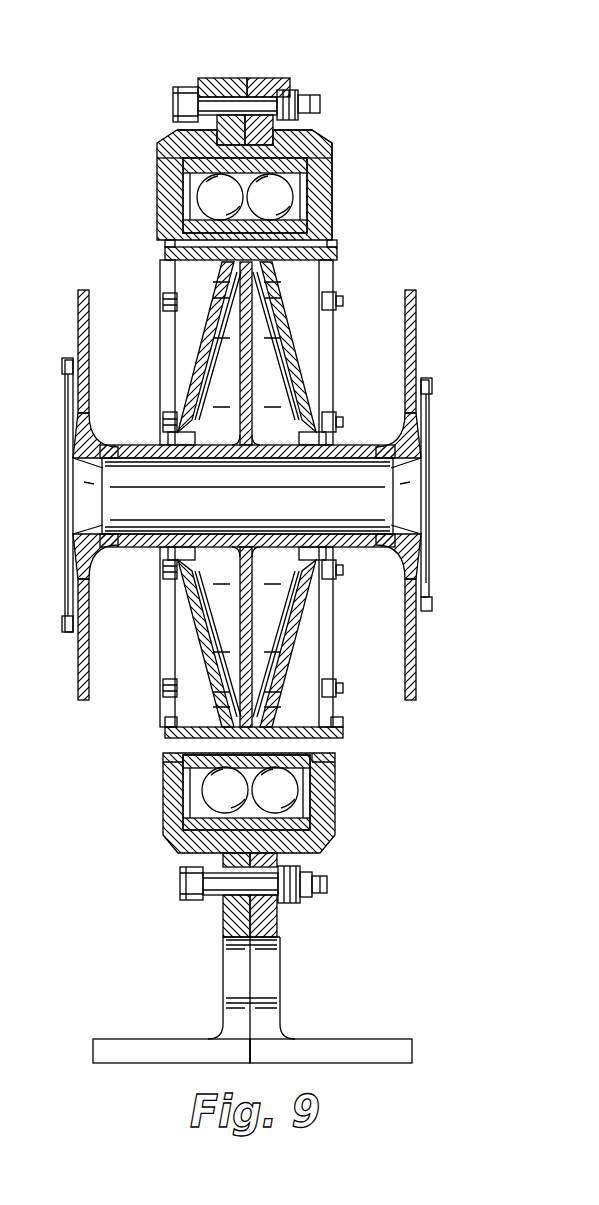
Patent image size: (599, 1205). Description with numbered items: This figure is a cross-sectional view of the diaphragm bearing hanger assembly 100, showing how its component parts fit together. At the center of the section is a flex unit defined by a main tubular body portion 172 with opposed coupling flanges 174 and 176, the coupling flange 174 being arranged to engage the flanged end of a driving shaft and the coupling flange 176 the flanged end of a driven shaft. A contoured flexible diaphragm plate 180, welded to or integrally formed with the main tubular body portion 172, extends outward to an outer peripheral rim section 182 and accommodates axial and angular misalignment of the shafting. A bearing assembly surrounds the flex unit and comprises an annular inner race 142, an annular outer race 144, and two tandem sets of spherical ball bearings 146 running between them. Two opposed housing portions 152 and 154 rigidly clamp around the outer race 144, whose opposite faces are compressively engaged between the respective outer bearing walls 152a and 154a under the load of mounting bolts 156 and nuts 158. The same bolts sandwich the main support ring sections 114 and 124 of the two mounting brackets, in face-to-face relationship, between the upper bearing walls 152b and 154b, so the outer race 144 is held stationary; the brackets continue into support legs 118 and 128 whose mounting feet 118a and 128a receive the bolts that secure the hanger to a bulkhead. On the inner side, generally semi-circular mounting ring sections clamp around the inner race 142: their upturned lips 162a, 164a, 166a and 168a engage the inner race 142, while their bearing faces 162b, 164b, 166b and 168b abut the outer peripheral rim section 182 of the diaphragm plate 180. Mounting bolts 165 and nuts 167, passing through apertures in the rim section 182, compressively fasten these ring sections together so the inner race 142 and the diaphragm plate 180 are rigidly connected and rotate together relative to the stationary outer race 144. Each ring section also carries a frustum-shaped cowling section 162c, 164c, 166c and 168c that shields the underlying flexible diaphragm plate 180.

The bearing hanger assembly 100 is at (438, 100).
The main support ring section 114 is at (224, 78).
The support leg 118 is at (230, 972).
The mounting foot 118a is at (112, 1047).
The main support ring section 124 is at (258, 78).
The support leg 128 is at (270, 982).
The mounting foot 128a is at (395, 1042).
The inner race 142 is at (172, 790).
The outer race 144 is at (182, 135).
The spherical ball bearings 146 is at (302, 800).
The housing portion 152 is at (160, 150).
The outer bearing wall 152a is at (167, 190).
The upper bearing wall 152b is at (205, 80).
The housing portion 154 is at (328, 132).
The outer bearing wall 154a is at (320, 177).
The upper bearing wall 154b is at (291, 78).
The mounting bolts 156 is at (178, 98).
The nuts 158 is at (300, 92).
The upturned lip 162a is at (176, 212).
The bearing face 162b is at (192, 335).
The cowling section 162c is at (188, 366).
The upturned lip 164a is at (316, 217).
The bearing face 164b is at (305, 330).
The cowling section 164c is at (302, 360).
The mounting bolts 165 is at (163, 733).
The upturned lip 166a is at (335, 760).
The bearing face 166b is at (275, 700).
The cowling section 166c is at (305, 612).
The nuts 167 is at (340, 714).
The upturned lip 168a is at (180, 756).
The bearing face 168b is at (225, 700).
The cowling section 168c is at (190, 628).
The main tubular body portion 172 is at (352, 447).
The coupling flange 174 is at (78, 668).
The coupling flange 176 is at (424, 640).
The flexible diaphragm plate 180 is at (240, 566).
The outer peripheral rim section 182 is at (170, 268).